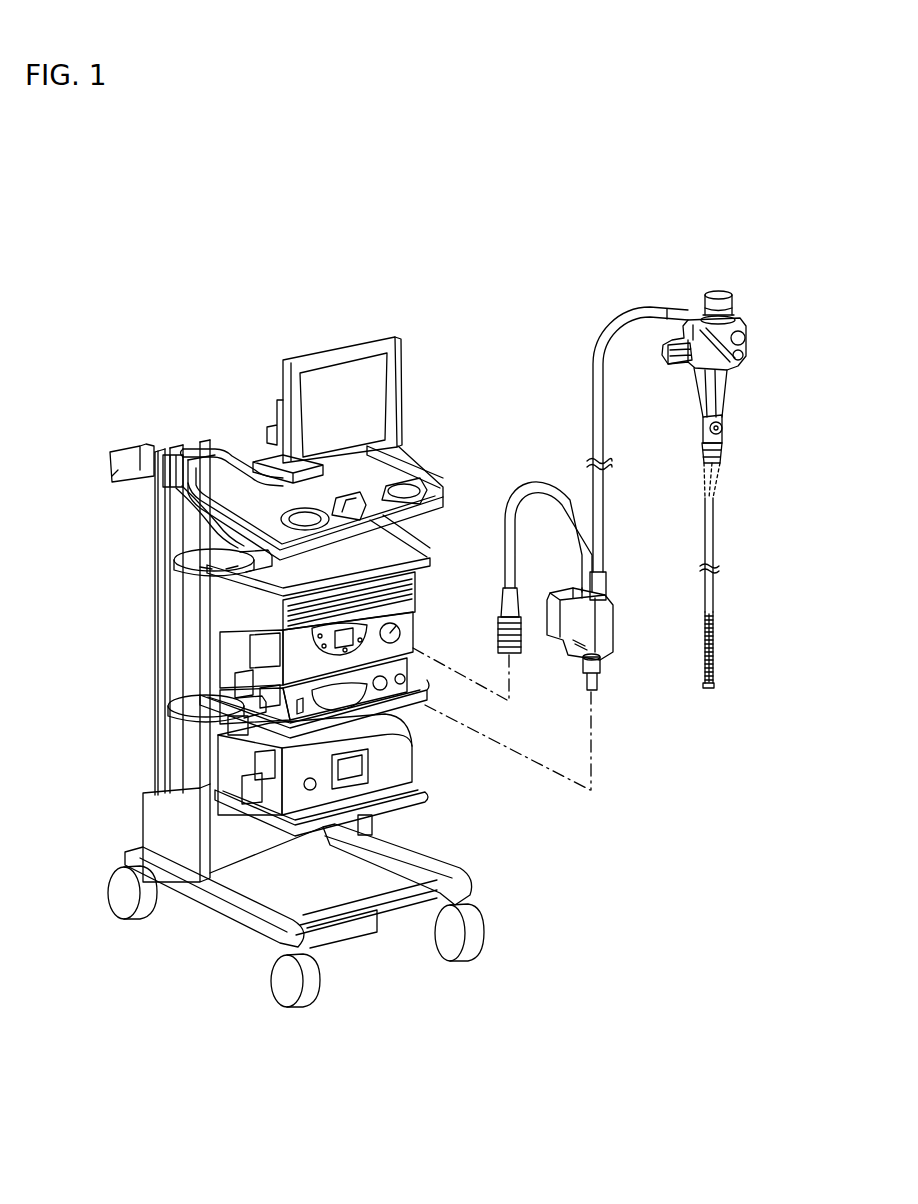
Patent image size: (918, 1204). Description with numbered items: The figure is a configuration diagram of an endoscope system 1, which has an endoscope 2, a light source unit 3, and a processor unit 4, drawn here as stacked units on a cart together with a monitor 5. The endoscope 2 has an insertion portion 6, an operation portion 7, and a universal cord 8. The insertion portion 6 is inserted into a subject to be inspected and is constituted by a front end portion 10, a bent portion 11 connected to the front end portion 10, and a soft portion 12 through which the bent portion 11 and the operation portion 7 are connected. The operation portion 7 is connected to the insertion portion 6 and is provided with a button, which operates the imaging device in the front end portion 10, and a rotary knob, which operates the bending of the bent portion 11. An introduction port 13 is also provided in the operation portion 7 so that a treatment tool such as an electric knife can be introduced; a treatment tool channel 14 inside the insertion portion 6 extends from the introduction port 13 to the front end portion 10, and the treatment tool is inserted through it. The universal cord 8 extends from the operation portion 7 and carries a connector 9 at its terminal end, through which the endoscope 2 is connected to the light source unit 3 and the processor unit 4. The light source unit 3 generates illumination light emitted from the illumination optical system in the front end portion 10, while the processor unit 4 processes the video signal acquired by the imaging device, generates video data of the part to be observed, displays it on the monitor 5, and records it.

The endoscope system 1 is at (178, 259).
The endoscope 2 is at (625, 296).
The light source unit 3 is at (225, 680).
The processor unit 4 is at (233, 636).
The monitor 5 is at (345, 378).
The insertion portion 6 is at (724, 584).
The operation portion 7 is at (750, 312).
The universal cord 8 is at (592, 400).
The connector 9 is at (503, 601).
The front end portion 10 is at (710, 680).
The bent portion 11 is at (713, 627).
The soft portion 12 is at (705, 527).
The introduction port 13 is at (725, 425).
The treatment tool channel 14 is at (720, 478).